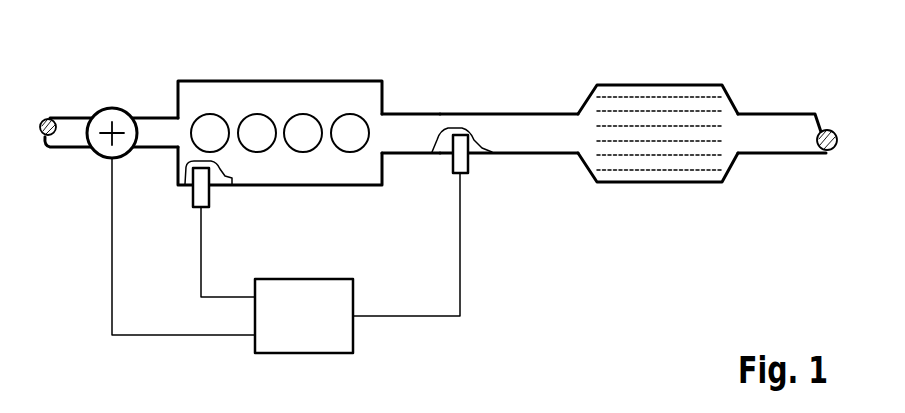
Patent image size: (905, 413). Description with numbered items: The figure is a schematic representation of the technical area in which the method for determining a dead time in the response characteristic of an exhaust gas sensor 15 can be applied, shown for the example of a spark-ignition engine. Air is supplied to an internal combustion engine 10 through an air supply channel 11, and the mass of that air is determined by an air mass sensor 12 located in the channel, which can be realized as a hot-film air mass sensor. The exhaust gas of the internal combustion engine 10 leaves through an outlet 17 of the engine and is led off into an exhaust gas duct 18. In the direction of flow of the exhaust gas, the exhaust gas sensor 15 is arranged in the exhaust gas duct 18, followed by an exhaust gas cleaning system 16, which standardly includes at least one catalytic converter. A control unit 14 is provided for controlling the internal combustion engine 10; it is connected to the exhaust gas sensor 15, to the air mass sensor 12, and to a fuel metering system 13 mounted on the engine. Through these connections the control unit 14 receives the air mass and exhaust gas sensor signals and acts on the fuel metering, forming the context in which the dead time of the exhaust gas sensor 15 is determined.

The internal combustion engine 10 is at (279, 81).
The air supply channel 11 is at (62, 118).
The air mass sensor 12 is at (112, 108).
The fuel metering system 13 is at (210, 198).
The control unit 14 is at (313, 279).
The exhaust gas sensor 15 is at (470, 167).
The exhaust gas cleaning system 16 is at (657, 84).
The outlet 17 is at (383, 132).
The exhaust gas duct 18 is at (512, 113).